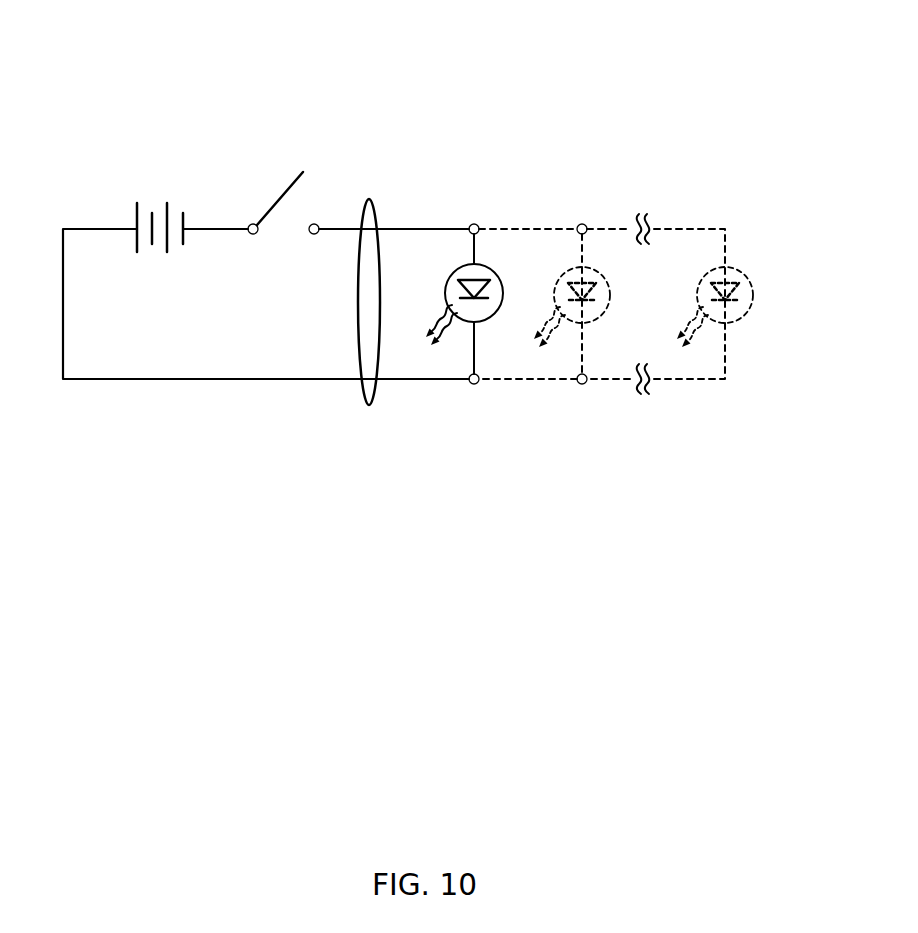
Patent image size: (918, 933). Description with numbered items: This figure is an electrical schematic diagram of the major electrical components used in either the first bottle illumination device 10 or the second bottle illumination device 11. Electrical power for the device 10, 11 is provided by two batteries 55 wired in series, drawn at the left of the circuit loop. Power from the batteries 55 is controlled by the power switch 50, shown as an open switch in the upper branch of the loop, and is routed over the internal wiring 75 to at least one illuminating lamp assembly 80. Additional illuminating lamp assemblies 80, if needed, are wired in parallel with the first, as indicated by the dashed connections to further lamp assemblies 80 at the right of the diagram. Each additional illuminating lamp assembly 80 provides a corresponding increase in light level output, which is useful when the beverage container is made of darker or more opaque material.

The first bottle illumination device 10 is at (416, 302).
The second bottle illumination device 11 is at (416, 302).
The power switch 50 is at (288, 182).
The batteries 55 is at (142, 208).
The internal wiring 75 is at (375, 217).
The illuminating lamp assembly 80 is at (502, 277).